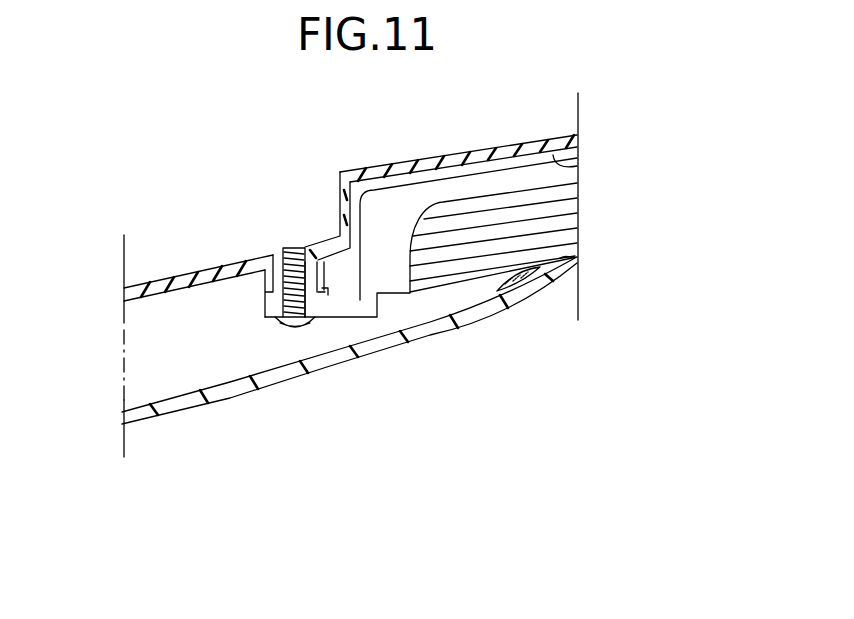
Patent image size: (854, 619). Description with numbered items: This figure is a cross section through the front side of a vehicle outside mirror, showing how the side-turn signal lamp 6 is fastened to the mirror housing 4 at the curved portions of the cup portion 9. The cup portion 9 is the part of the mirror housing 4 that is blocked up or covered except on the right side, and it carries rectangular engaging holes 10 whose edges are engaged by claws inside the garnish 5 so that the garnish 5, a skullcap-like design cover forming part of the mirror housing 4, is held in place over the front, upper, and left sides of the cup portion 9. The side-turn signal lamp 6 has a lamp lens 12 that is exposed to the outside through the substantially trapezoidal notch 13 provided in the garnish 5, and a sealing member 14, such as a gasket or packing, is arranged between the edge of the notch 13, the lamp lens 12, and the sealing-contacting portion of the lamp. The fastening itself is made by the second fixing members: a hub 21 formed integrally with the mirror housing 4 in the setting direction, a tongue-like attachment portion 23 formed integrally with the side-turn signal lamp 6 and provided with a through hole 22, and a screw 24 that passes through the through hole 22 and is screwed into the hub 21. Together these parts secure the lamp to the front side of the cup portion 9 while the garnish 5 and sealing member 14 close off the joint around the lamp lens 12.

The mirror housing 4 is at (494, 141).
The garnish 5 is at (177, 424).
The side-turn signal lamp 6 is at (397, 297).
The cup portion 9 is at (577, 168).
The engaging holes 10 is at (176, 277).
The lamp lens 12 is at (415, 197).
The notch 13 is at (573, 258).
The sealing member 14 is at (517, 290).
The second fixing member (hub) 21 is at (323, 241).
The through hole 22 is at (276, 332).
The second fixing member (attachment portion) 23 is at (347, 289).
The second fixing member (screw) 24 is at (297, 332).